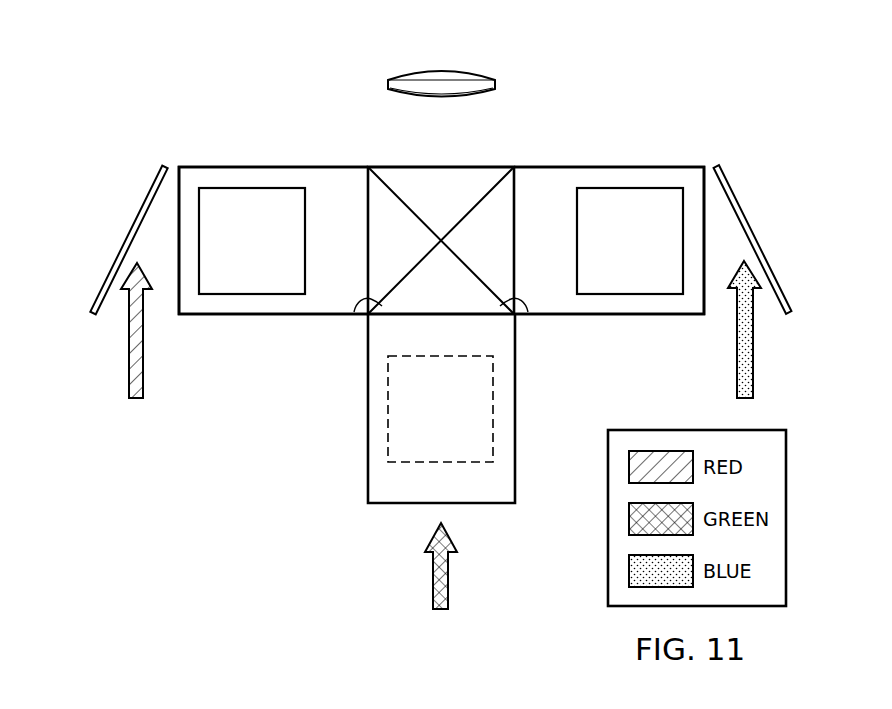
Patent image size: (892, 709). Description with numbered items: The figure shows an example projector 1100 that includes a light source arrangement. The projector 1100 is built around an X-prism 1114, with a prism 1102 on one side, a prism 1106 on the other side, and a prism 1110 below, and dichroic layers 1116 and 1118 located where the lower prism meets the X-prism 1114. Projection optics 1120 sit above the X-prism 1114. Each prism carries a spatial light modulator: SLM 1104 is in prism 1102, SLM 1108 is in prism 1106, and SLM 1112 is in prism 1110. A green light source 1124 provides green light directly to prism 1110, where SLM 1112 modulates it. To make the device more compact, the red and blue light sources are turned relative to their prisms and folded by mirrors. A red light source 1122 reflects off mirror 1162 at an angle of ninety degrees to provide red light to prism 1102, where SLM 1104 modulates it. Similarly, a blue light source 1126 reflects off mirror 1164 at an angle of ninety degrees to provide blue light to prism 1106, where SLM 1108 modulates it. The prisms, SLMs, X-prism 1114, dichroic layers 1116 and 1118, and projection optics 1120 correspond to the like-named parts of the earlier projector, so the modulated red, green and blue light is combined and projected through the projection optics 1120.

The projector 1100 is at (686, 69).
The prism 1102 is at (272, 175).
The SLM 1104 is at (252, 241).
The prism 1106 is at (605, 175).
The SLM 1108 is at (630, 241).
The prism 1110 is at (366, 409).
The SLM 1112 is at (440, 409).
The X-prism 1114 is at (443, 175).
The dichroic layer 1116 is at (528, 312).
The dichroic layer 1118 is at (354, 312).
The projection optics 1120 is at (388, 82).
The red light source 1122 is at (129, 350).
The green light source 1124 is at (433, 582).
The blue light source 1126 is at (754, 344).
The mirror 1162 is at (126, 237).
The mirror 1164 is at (756, 237).